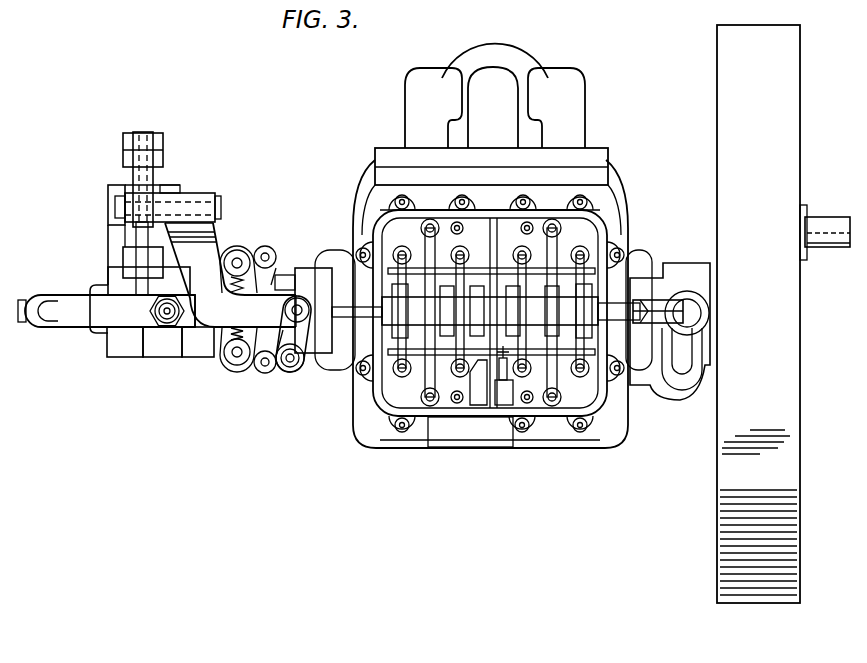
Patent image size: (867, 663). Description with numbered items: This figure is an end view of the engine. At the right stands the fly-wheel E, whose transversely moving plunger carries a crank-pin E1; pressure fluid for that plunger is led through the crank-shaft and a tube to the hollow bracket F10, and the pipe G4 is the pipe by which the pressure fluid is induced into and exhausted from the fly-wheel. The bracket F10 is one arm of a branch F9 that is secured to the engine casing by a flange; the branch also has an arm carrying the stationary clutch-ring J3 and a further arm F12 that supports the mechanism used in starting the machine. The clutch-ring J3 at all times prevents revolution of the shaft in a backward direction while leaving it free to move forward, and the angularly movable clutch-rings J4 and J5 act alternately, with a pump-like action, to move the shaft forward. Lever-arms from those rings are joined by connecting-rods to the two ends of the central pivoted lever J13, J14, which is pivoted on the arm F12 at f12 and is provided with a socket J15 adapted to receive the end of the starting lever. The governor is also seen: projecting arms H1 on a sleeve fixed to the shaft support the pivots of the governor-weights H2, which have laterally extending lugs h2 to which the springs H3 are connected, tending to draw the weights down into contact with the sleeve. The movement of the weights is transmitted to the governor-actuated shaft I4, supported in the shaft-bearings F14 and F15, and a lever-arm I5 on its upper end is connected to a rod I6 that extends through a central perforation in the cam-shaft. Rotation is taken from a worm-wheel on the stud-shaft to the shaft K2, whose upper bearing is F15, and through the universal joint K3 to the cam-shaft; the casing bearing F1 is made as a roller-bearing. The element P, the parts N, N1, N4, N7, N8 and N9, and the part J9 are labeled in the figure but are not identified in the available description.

The valve housing P is at (606, 446).
The bottom plate N1 is at (470, 432).
The valve stem N is at (384, 229).
The valve shaft with cams N4 is at (465, 387).
The valve stem N7 is at (506, 266).
The valve stem lower end N8 is at (420, 363).
The long valve stem N9 is at (454, 268).
The socket J15 is at (147, 148).
The central pivoted lever J13 is at (131, 170).
The pivot f12 is at (112, 210).
The central pivoted lever J14 is at (136, 243).
The bracket lug J9 is at (96, 331).
The clutch-ring J5 is at (125, 342).
The clutch-ring J4 is at (162, 342).
The stationary clutch-ring J3 is at (198, 342).
The hollow bracket F10 is at (106, 311).
The pipe G4 is at (162, 323).
The arm F12 is at (205, 275).
The branch F9 is at (245, 311).
The governor-weights H2 is at (210, 382).
The laterally-extending lugs h2 is at (239, 261).
The projecting arms H1 is at (276, 260).
The springs H3 is at (263, 373).
The lever-arm I5 is at (293, 334).
The governor-actuated shaft I4 is at (289, 366).
The rod I6 is at (333, 312).
The shaft-bearing F14 is at (286, 372).
The fly-wheel E is at (758, 314).
The crank-pin E1 is at (825, 232).
The bearing F1 is at (668, 271).
The universal joint K3 is at (680, 303).
The shaft K2 is at (671, 362).
The bearing F15 is at (700, 336).